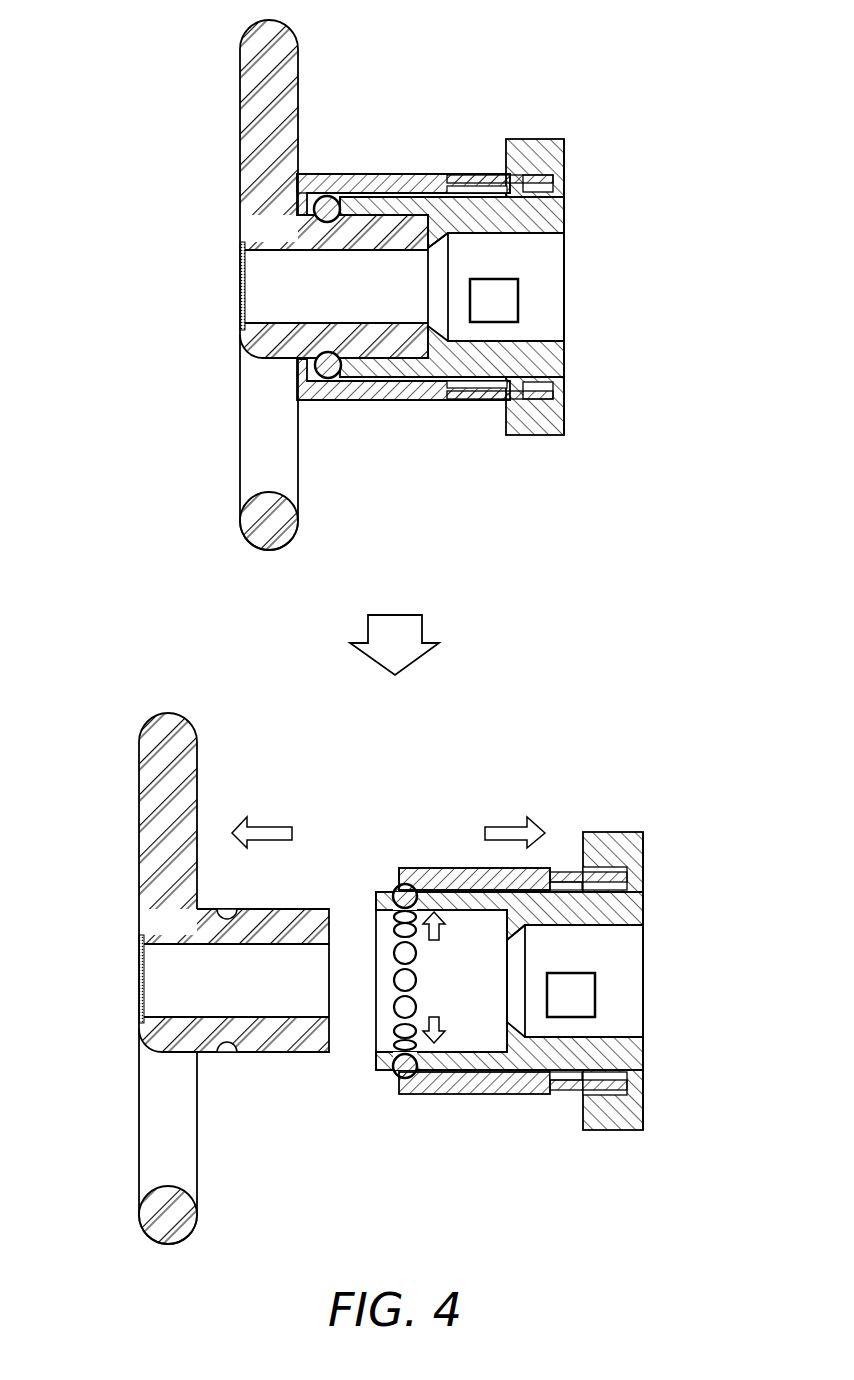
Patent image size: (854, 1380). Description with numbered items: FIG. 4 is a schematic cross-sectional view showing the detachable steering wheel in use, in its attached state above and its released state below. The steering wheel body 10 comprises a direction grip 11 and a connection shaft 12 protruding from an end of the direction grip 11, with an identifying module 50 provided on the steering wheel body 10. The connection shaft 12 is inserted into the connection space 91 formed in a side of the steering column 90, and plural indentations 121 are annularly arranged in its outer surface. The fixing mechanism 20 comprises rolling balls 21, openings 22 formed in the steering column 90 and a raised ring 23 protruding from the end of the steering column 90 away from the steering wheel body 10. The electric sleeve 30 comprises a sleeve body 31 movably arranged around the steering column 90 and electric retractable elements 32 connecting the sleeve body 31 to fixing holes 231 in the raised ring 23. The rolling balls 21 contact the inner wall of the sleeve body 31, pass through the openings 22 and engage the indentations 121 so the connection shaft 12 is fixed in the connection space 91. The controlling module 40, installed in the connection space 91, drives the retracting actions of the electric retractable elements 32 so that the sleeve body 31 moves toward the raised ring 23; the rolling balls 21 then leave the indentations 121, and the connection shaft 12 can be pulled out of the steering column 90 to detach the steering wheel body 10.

The steering wheel body 10 is at (222, 47).
The direction grip 11 is at (246, 100).
The connection shaft 12 is at (330, 240).
The indentations 121 is at (318, 232).
The identifying module 50 is at (240, 301).
The fixing mechanism 20 is at (303, 468).
The rolling balls 21 is at (322, 197).
The openings 22 is at (337, 378).
The raised ring 23 is at (530, 425).
The fixing holes 231 is at (568, 398).
The electric sleeve 30 is at (407, 162).
The sleeve body 31 is at (380, 183).
The electric retractable element 32 is at (470, 180).
The controlling module 40 is at (512, 307).
The steering column 90 is at (540, 210).
The connection space 91 is at (535, 246).